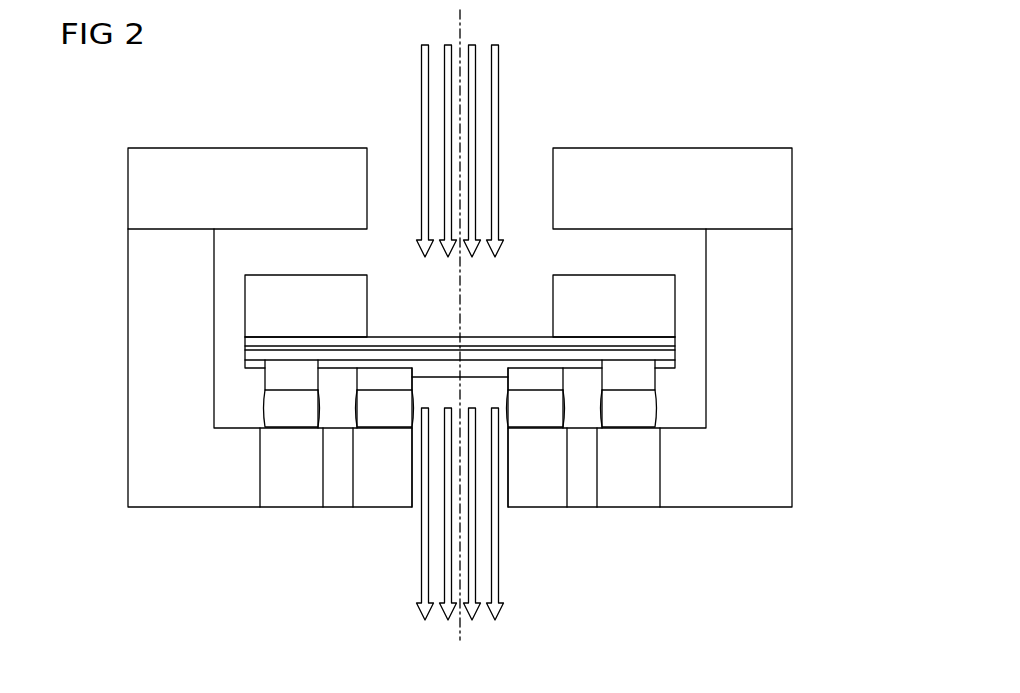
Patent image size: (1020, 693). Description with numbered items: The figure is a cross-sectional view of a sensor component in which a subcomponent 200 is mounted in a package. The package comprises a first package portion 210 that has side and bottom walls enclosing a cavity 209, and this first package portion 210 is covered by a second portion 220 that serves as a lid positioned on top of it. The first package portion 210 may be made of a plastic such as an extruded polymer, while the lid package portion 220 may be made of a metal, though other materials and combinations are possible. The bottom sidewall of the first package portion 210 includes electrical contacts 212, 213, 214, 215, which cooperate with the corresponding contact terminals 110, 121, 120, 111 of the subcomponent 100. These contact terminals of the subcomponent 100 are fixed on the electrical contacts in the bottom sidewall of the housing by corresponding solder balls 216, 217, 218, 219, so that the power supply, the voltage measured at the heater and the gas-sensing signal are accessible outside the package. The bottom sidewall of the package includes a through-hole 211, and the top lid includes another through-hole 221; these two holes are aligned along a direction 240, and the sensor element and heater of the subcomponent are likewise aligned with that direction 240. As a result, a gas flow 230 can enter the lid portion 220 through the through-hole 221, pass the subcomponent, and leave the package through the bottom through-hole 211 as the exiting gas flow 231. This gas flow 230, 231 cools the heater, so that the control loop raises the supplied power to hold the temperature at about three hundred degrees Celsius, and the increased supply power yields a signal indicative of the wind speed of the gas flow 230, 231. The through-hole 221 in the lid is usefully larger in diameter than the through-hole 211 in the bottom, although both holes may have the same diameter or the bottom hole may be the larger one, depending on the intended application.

The subcomponent 200 is at (750, 96).
The subcomponent 100 is at (552, 311).
The contact terminal 110 is at (275, 380).
The contact terminal 111 is at (645, 380).
The contact terminal 120 is at (522, 377).
The contact terminal 121 is at (402, 377).
The cavity 209 is at (672, 267).
The first package portion 210 is at (138, 283).
The through-hole 211 is at (500, 509).
The electrical contact 212 is at (292, 508).
The electrical contact 213 is at (388, 508).
The electrical contact 214 is at (547, 508).
The electrical contact 215 is at (630, 508).
The solder ball 216 is at (274, 407).
The solder ball 217 is at (383, 401).
The solder ball 218 is at (548, 412).
The solder ball 219 is at (640, 407).
The second portion 220 is at (138, 192).
The through-hole 221 is at (530, 168).
The gas flow 230 is at (420, 70).
The exiting gas flow 231 is at (417, 588).
The direction 240 is at (460, 640).